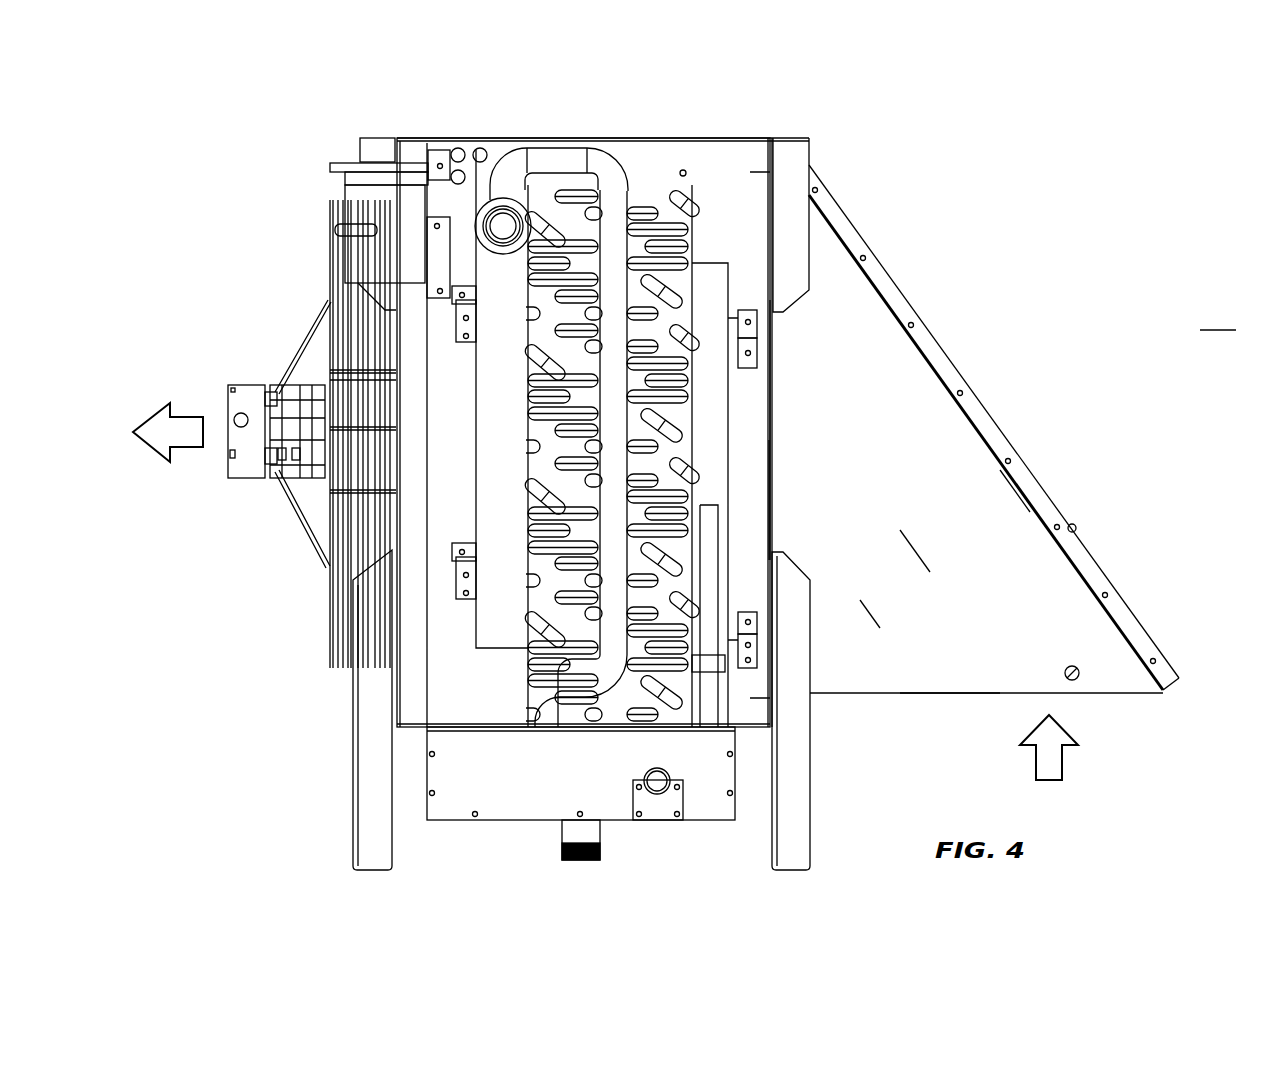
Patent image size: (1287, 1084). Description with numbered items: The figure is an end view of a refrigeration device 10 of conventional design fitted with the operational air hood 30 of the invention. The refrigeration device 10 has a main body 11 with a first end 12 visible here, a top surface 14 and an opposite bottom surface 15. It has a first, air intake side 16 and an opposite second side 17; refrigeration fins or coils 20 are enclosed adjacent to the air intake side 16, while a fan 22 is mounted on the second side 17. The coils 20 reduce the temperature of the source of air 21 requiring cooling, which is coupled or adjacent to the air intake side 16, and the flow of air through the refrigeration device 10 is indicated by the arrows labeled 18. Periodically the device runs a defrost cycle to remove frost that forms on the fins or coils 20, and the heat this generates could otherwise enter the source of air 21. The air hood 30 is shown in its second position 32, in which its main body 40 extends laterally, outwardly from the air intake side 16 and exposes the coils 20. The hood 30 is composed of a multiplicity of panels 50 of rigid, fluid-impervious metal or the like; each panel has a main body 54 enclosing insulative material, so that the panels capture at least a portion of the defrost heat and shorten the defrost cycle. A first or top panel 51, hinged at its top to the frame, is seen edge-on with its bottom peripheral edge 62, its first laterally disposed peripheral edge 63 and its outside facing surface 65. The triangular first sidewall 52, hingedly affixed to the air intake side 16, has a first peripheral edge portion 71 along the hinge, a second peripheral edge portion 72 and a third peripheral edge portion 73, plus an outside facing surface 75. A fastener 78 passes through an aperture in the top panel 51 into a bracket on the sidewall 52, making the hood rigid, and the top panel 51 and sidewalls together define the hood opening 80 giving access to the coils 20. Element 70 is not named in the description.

The refrigeration device 10 is at (232, 160).
The main body 11 is at (445, 185).
The first end 12 is at (683, 150).
The top surface 14 is at (498, 136).
The bottom surface 15 is at (645, 822).
The air intake side 16 is at (772, 448).
The second side 17 is at (355, 728).
The arrows indicating flow of air 18 is at (195, 446).
The refrigeration fins or coils 20 is at (668, 363).
The source of air 21 is at (1230, 350).
The fan 22 is at (262, 405).
The air hood 30 is at (1060, 378).
The second position 32 is at (1060, 511).
The main body of the air hood 40 is at (1132, 574).
The multiplicity of panels 50 is at (1072, 632).
The top panel 51 is at (968, 386).
The first sidewall 52 is at (940, 544).
The main body of panel 54 is at (1027, 478).
The bottom peripheral edge 62 is at (1172, 682).
The first laterally disposed peripheral edge 63 is at (882, 276).
The outside facing surface 65 is at (912, 309).
The lower panel 70 is at (970, 658).
The first peripheral edge portion 71 is at (772, 505).
The second peripheral edge portion 72 is at (892, 693).
The third peripheral edge portion 73 is at (1022, 495).
The outside facing surface 75 is at (881, 607).
The fastener 78 is at (1080, 529).
The hood opening 80 is at (926, 708).